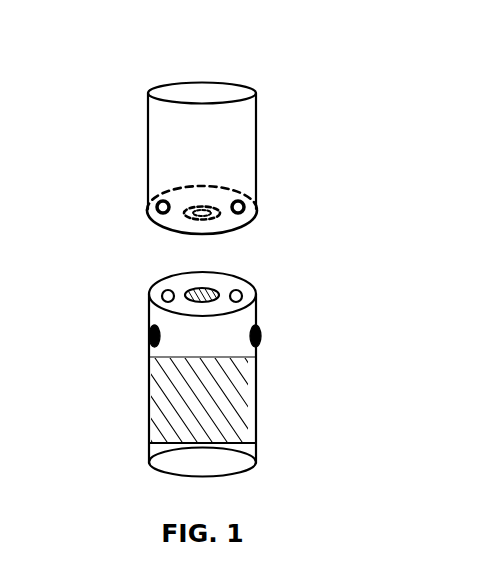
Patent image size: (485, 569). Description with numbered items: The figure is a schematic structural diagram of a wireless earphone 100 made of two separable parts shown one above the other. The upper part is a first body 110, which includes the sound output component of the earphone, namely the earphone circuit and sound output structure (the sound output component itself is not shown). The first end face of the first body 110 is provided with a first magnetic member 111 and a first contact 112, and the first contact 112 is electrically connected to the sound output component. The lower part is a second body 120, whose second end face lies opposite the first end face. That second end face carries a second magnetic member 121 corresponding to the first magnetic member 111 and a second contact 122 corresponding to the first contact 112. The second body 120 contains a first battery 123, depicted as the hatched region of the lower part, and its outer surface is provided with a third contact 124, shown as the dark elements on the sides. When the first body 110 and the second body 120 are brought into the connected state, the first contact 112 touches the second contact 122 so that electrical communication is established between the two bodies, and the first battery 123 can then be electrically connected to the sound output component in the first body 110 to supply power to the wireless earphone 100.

The wireless earphone 100 is at (202, 53).
The first body 110 is at (225, 140).
The first magnetic member 111 is at (205, 212).
The first contact 112 is at (152, 202).
The second body 120 is at (233, 327).
The second magnetic member 121 is at (205, 292).
The second contact 122 is at (160, 293).
The first battery 123 is at (233, 417).
The third contact 124 is at (147, 335).